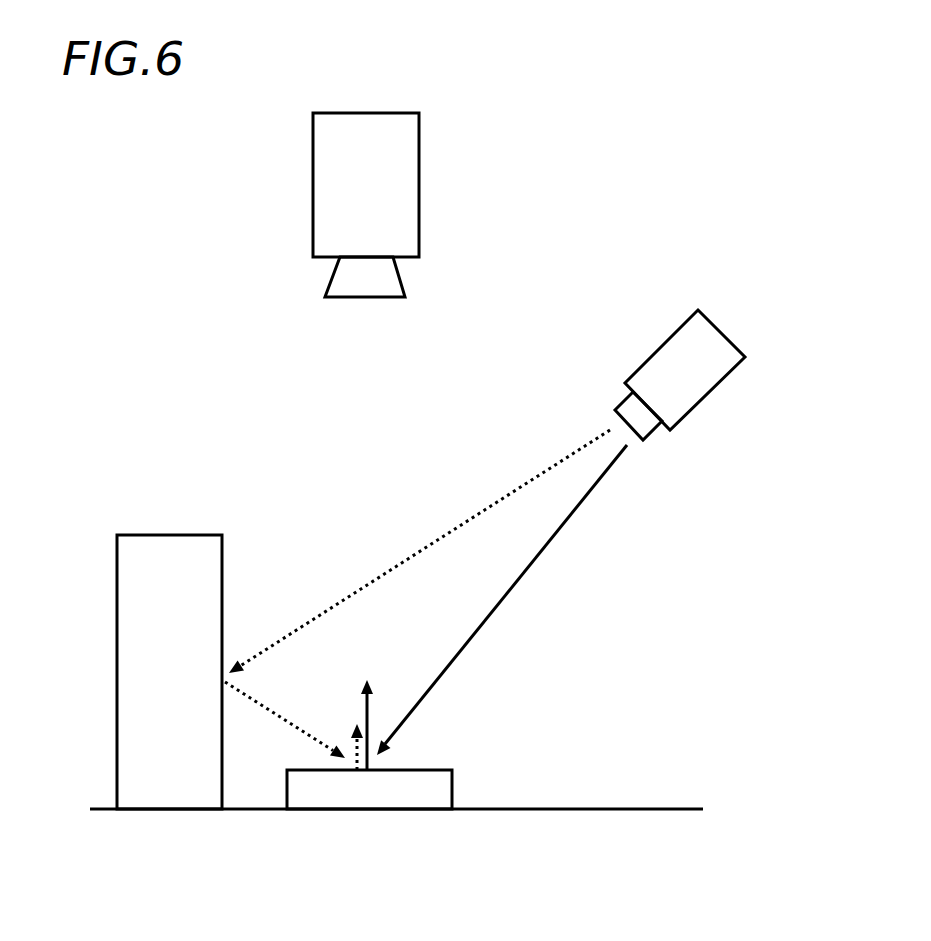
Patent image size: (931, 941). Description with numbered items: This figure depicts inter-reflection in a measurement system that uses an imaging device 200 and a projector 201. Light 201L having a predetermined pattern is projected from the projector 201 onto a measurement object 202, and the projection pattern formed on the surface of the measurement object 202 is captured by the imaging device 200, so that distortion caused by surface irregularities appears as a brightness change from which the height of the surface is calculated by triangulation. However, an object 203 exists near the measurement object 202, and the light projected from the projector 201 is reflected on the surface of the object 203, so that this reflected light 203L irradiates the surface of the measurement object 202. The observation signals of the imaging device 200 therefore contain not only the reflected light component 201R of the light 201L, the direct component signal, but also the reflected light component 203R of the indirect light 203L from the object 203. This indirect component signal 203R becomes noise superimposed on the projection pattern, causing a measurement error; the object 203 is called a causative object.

The imaging device 200 is at (313, 160).
The projector 201 is at (711, 322).
The light 201L is at (573, 510).
The reflected light component 201R is at (367, 700).
The measurement object 202 is at (447, 785).
The object 203 is at (163, 535).
The reflected light 203L is at (275, 718).
The reflected light component 203R is at (352, 745).